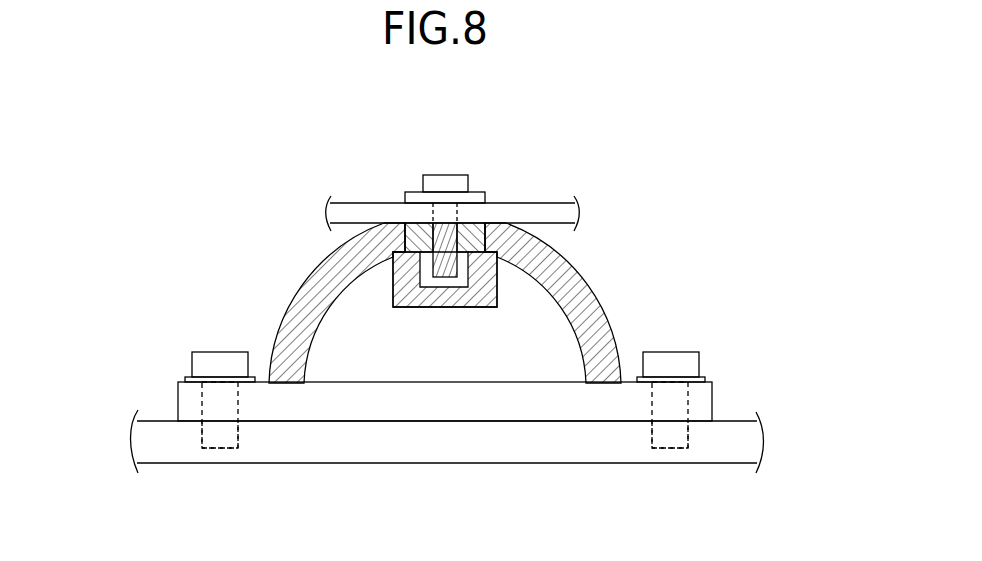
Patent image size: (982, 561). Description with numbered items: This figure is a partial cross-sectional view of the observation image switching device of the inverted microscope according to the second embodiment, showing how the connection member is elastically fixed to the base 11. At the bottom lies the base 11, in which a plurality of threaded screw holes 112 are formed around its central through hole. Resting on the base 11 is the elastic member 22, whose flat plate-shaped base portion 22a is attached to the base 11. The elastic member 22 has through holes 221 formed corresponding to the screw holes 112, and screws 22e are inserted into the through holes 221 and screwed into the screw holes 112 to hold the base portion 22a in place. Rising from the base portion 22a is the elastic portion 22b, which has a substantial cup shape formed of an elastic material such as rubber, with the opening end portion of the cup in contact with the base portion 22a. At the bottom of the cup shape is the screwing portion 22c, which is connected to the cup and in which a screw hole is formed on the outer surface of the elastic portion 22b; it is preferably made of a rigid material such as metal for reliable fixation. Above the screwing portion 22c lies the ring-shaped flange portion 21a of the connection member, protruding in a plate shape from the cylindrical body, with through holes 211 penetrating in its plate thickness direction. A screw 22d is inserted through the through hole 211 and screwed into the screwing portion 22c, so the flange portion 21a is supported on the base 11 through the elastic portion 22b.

The base 11 is at (730, 450).
The screw hole 112 is at (238, 437).
The flange portion 21a is at (359, 212).
The through hole 211 is at (433, 214).
The elastic member 22 is at (656, 262).
The base portion 22a is at (327, 408).
The elastic portion 22b is at (570, 264).
The screwing portion 22c is at (486, 222).
The screw 22d is at (449, 175).
The screws 22e is at (218, 351).
The through hole 221 is at (201, 407).